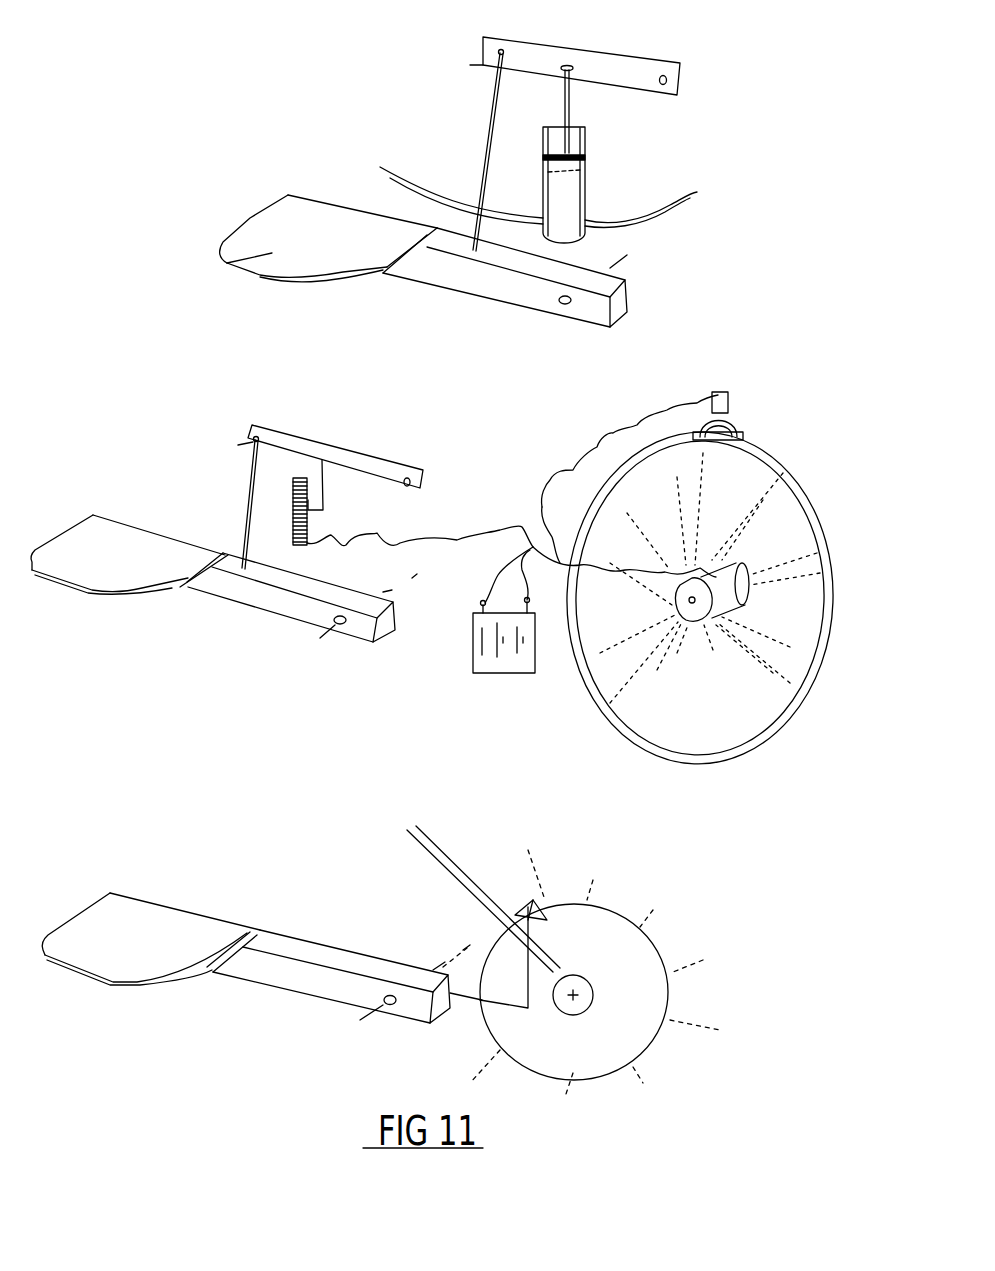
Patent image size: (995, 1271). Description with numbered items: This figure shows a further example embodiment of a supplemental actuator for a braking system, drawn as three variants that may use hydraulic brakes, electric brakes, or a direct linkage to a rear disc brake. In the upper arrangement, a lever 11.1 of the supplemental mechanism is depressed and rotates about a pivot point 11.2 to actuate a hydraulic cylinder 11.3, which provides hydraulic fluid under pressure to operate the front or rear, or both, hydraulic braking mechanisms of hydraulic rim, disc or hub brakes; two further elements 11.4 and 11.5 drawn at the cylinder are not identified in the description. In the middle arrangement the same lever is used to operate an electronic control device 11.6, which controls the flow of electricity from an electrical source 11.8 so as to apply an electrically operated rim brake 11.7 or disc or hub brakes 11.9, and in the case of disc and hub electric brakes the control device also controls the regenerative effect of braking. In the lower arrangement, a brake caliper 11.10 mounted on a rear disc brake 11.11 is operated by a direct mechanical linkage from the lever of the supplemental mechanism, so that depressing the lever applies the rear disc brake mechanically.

The lever 11.1 is at (227, 263).
The pivot point 11.2 is at (565, 302).
The hydraulic cylinder 11.3 is at (547, 135).
The air supply tube 11.4 is at (390, 180).
The air supply tube 11.5 is at (665, 209).
The electronic control device 11.6 is at (310, 512).
The electrically operated rim brake 11.7 is at (730, 412).
The electrical source 11.8 is at (478, 663).
The disc or hub brakes 11.9 is at (683, 618).
The brake caliper 11.10 is at (533, 908).
The rear disc brake 11.11 is at (627, 990).